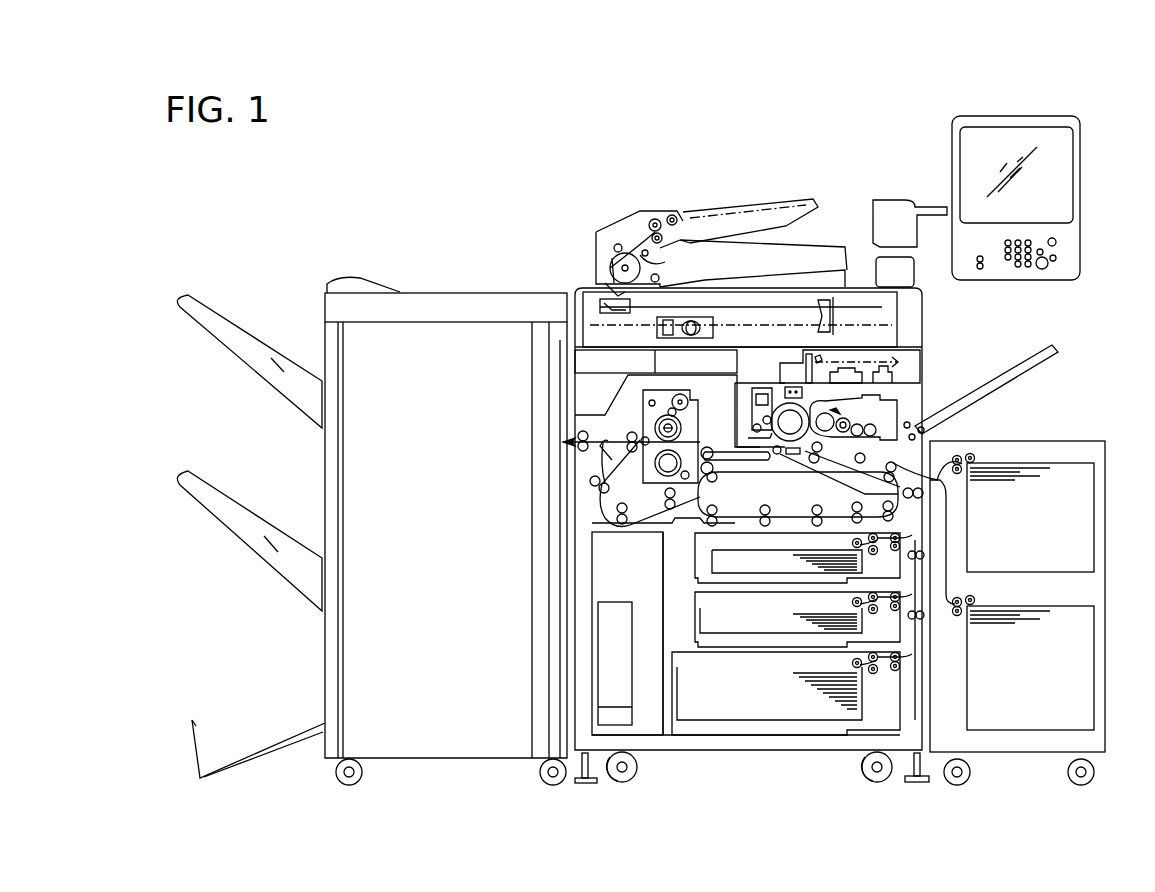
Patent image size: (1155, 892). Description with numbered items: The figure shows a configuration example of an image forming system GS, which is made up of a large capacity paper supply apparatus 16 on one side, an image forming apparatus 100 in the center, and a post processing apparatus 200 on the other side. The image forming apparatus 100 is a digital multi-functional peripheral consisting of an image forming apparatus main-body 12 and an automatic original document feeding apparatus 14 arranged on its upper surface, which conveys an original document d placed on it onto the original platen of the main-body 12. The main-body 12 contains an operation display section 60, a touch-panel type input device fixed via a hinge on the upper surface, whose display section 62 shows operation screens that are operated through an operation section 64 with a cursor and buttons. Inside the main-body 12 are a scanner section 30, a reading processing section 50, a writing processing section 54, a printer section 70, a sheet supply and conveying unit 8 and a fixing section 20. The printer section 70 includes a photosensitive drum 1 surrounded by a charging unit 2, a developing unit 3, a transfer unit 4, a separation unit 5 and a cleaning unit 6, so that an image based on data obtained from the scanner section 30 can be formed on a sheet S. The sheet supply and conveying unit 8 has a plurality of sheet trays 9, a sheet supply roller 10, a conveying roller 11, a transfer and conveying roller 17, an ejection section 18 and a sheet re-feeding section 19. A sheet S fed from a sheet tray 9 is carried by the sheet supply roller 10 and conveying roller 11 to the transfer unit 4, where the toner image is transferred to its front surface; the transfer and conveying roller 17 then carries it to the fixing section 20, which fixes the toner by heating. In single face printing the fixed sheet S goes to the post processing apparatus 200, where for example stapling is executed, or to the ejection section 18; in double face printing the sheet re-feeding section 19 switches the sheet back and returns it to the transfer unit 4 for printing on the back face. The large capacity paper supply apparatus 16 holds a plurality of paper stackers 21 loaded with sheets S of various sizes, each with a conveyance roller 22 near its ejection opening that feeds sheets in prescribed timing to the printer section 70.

The image forming system GS is at (525, 107).
The post processing apparatus 200 is at (517, 287).
The image forming apparatus main-body 12 is at (923, 307).
The scanner section 30 is at (858, 300).
The reading processing section 50 is at (628, 362).
The charging unit 2 is at (795, 372).
The photosensitive drum 1 is at (782, 394).
The writing processing section 54 is at (898, 445).
The printer section 70 is at (733, 396).
The fixing section 20 is at (696, 427).
The cleaning unit 6 is at (735, 438).
The separation unit 5 is at (785, 458).
The transfer unit 4 is at (798, 458).
The conveying roller 11 is at (852, 480).
The developing unit 3 is at (888, 470).
The ejection section 18 is at (586, 433).
The sheet re-feeding section 19 is at (604, 515).
The transfer and conveying roller 17 is at (742, 468).
The sheet supply and conveying unit 8 is at (676, 557).
The sheet tray 9 is at (694, 542).
The sheet supply roller 10 is at (874, 553).
The sheet S is at (708, 552).
The image forming apparatus 100 is at (616, 215).
The automatic original document feeding apparatus 14 is at (825, 200).
The original document d is at (757, 203).
The operation display section 60 is at (1115, 130).
The display section 62 is at (1073, 143).
The operation section 64 is at (1063, 237).
The large capacity paper supply apparatus 16 is at (1057, 406).
The paper stacker 21 is at (1062, 462).
The conveyance roller 22 is at (958, 455).